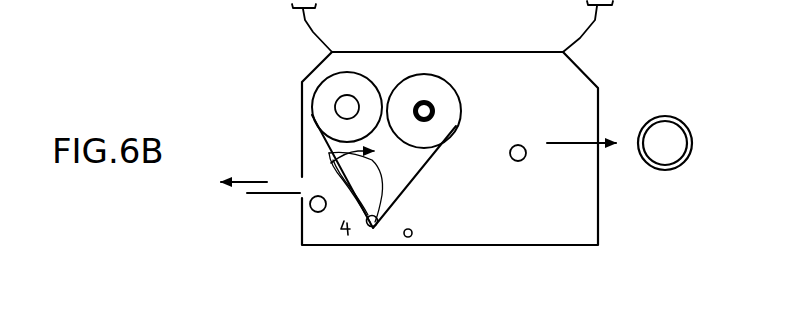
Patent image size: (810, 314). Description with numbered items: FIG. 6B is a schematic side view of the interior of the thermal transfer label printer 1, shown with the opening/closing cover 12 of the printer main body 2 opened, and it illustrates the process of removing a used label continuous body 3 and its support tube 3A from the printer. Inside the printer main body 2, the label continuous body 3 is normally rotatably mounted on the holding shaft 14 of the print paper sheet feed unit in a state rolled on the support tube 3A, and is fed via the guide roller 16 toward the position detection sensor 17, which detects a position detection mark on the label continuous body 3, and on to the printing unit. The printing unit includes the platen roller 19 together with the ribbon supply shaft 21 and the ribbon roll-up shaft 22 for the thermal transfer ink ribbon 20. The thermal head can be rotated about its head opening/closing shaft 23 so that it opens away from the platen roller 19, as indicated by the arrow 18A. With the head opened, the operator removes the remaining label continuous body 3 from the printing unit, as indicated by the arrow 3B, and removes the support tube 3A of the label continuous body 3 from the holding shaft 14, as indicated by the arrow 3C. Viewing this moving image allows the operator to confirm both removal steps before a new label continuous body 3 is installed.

The thermal transfer label printer 1 is at (611, 72).
The printer main body 2 is at (598, 221).
The label continuous body 3 is at (268, 196).
The support tube 3A is at (693, 142).
The arrow 3B is at (243, 178).
The arrow 3C is at (606, 138).
The opening/closing cover 12 is at (595, 28).
The holding shaft 14 is at (519, 145).
The guide roller 16 is at (409, 238).
The position detection sensor 17 is at (347, 240).
The arrow 18A is at (376, 186).
The platen roller 19 is at (310, 211).
The thermal transfer ink ribbon 20 is at (316, 126).
The ribbon supply shaft 21 is at (424, 100).
The ribbon roll-up shaft 22 is at (346, 95).
The head opening/closing shaft 23 is at (373, 235).